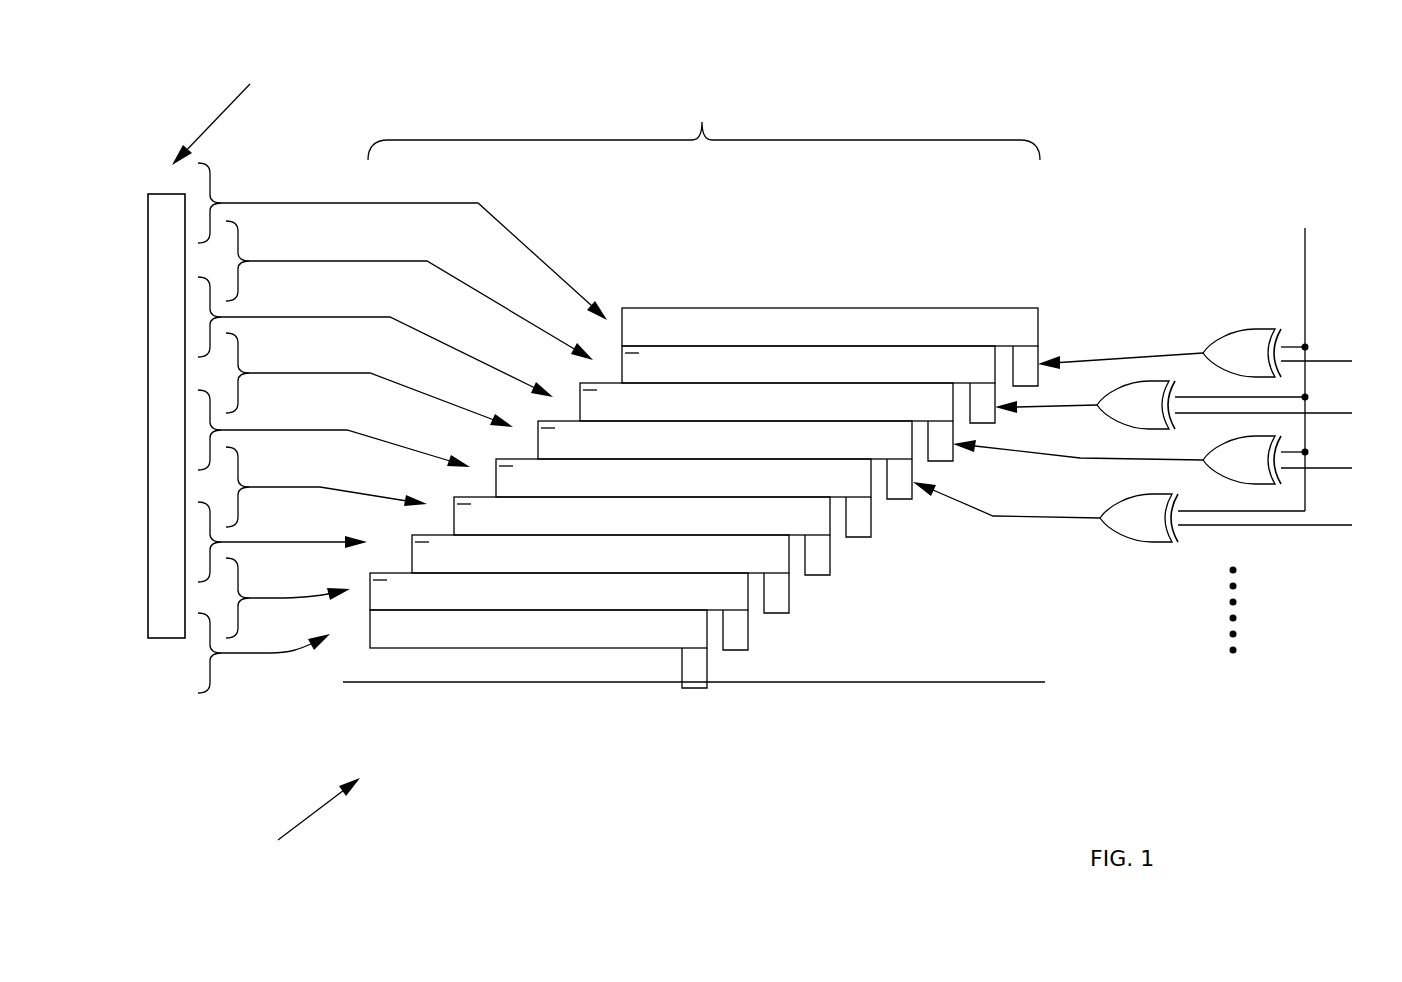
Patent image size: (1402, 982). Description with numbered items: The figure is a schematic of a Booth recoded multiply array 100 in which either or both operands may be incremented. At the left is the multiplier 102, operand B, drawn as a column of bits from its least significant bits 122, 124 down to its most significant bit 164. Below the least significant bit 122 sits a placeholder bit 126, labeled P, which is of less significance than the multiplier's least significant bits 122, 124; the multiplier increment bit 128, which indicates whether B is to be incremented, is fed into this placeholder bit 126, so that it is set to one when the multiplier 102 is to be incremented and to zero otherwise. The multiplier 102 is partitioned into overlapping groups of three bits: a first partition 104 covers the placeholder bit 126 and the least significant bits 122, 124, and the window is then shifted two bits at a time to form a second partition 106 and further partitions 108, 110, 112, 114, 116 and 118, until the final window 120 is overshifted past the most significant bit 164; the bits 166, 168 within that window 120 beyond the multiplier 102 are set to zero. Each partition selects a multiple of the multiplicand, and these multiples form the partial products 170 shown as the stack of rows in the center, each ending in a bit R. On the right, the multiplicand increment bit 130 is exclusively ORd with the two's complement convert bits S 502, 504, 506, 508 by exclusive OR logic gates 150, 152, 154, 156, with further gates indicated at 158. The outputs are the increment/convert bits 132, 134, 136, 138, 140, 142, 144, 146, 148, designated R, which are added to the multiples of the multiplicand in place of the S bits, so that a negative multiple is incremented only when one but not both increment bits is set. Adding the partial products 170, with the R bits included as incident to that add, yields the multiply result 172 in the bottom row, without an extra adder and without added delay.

The multiply array 100 is at (300, 824).
The multiplier 102 is at (150, 387).
The first partition 104 is at (258, 203).
The second partition 106 is at (288, 261).
The multiplier partition 108 is at (286, 317).
The multiplier partition 110 is at (290, 373).
The multiplier partition 112 is at (276, 430).
The multiplier partition 114 is at (286, 487).
The multiplier partition 116 is at (279, 542).
The multiplier partition 118 is at (278, 598).
The overshifted window 120 is at (244, 656).
The least significant bit 122 is at (148, 207).
The least significant bit 124 is at (150, 240).
The placeholder bit 126 is at (150, 178).
The B_INC 128 is at (293, 72).
The A_INC 130 is at (1302, 192).
The increment/convert bit 132 is at (1040, 350).
The increment/convert bit 134 is at (997, 418).
The increment/convert bit 136 is at (953, 453).
The increment/convert bit 138 is at (913, 473).
The increment/convert bit 140 is at (870, 520).
The increment/convert bit 142 is at (830, 553).
The increment/convert bit 144 is at (790, 590).
The increment/convert bit 146 is at (750, 635).
The increment/convert bit 148 is at (707, 668).
The exclusive OR logic gate 150 is at (1247, 330).
The exclusive OR logic gate 152 is at (1100, 388).
The exclusive OR logic gate 154 is at (1207, 478).
The exclusive OR logic gate 156 is at (1120, 533).
The exclusive OR logic gate 158 is at (1223, 613).
The most significant bit 164 is at (150, 622).
The trivial bit 166 is at (148, 652).
The trivial bit 168 is at (150, 682).
The partial products 170 is at (686, 367).
The multiply result 172 is at (633, 727).
The 2's complement convert bit 502 is at (668, 307).
The 2's complement convert bit 504 is at (617, 350).
The 2's complement convert bit 506 is at (1337, 468).
The 2's complement convert bit 508 is at (1340, 525).